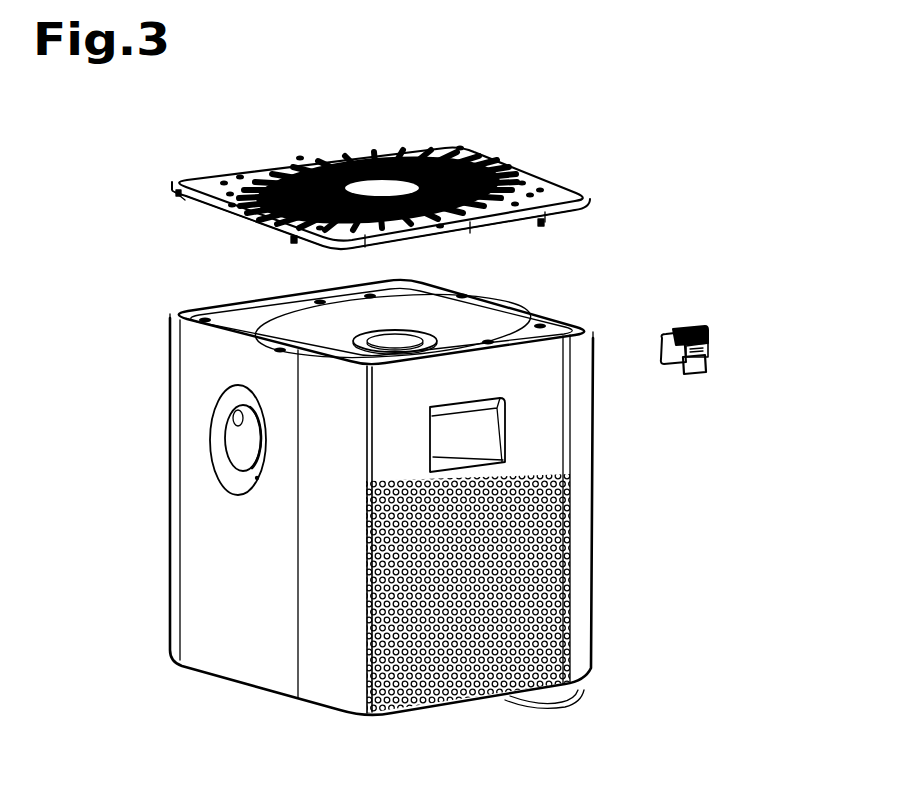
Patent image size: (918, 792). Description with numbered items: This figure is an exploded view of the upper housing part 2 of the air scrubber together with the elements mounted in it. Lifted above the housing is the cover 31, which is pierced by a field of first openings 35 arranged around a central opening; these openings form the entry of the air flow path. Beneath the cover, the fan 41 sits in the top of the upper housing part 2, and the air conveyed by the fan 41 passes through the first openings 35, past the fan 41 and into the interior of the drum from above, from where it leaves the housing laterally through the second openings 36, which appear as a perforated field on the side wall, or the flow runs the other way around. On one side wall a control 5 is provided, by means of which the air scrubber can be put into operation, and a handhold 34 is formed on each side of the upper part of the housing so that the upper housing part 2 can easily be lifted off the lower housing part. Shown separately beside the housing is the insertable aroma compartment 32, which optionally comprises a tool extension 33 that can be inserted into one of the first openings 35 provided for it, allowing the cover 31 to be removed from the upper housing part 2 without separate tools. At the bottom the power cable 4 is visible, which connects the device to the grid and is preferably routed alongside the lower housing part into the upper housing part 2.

The upper housing part 2 is at (690, 249).
The power cable 4 is at (575, 695).
The control 5 is at (242, 442).
The cover 31 is at (560, 197).
The aroma compartment 32 is at (708, 358).
The tool extension 33 is at (665, 337).
The handhold 34 is at (480, 432).
The first openings 35 is at (476, 165).
The second openings 36 is at (560, 604).
The fan 41 is at (352, 336).